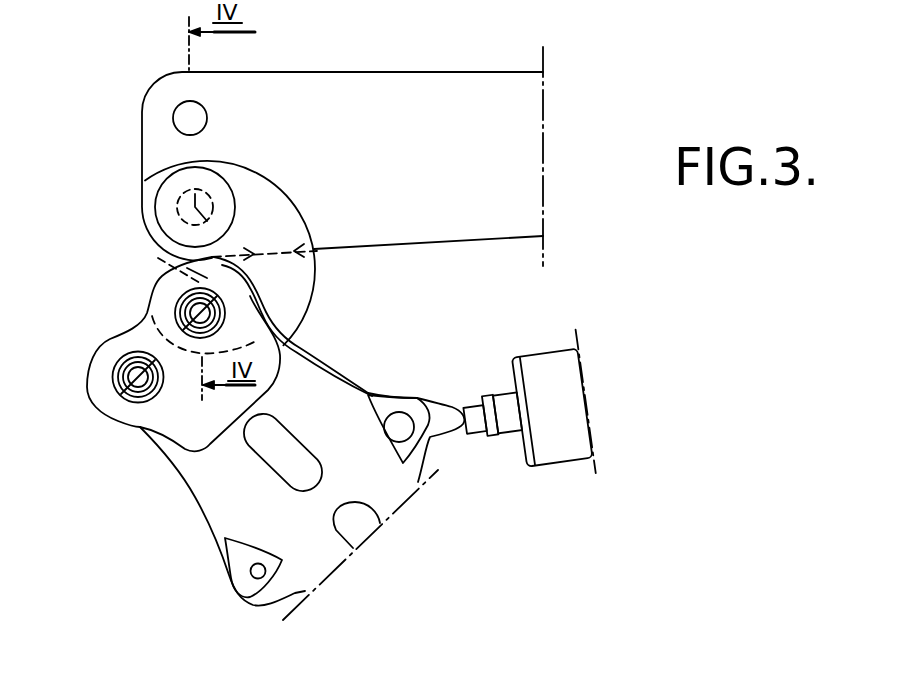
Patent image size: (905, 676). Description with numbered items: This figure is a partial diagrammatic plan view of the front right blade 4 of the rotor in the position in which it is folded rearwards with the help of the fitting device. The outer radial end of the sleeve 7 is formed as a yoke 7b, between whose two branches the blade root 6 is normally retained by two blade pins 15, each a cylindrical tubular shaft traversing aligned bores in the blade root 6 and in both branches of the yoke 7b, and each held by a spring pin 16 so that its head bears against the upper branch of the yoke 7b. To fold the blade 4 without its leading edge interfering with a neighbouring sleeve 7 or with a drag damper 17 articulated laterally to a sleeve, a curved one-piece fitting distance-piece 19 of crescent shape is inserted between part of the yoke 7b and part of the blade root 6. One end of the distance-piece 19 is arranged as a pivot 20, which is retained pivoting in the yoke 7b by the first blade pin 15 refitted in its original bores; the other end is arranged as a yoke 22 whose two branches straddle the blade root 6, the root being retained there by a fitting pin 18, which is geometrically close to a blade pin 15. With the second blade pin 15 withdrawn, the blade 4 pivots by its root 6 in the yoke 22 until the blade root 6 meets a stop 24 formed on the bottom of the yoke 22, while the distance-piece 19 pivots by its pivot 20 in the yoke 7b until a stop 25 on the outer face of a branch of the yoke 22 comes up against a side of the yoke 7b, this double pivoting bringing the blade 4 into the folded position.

The front right blade 4 is at (472, 66).
The blade root 6 is at (324, 92).
The sleeve 7 is at (232, 505).
The yoke 7b is at (123, 338).
The blade pin 15 is at (222, 313).
The spring pin 16 is at (194, 312).
The drag damper 17 is at (548, 440).
The fitting pin 18 is at (162, 191).
The fitting distance-piece 19 is at (324, 265).
The pivot 20 is at (210, 259).
The yoke 22 is at (254, 188).
The stop 24 is at (312, 236).
The stop 25 is at (243, 304).